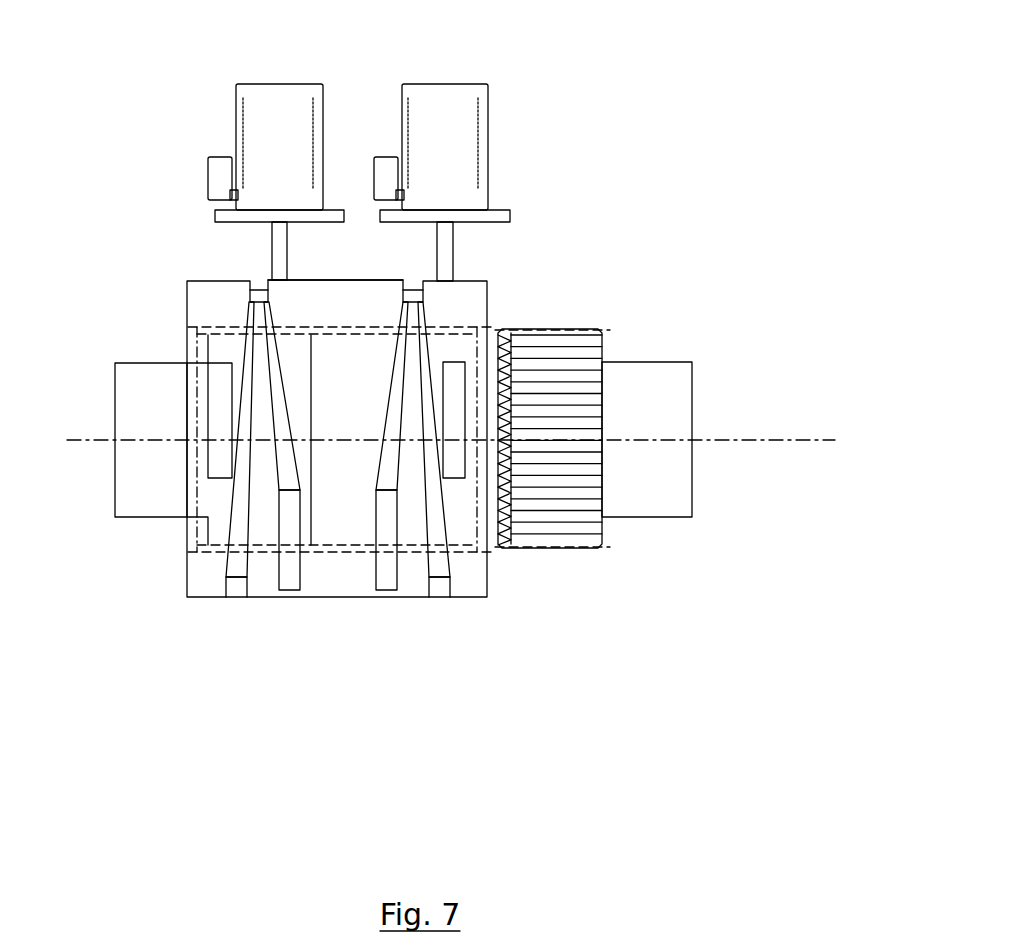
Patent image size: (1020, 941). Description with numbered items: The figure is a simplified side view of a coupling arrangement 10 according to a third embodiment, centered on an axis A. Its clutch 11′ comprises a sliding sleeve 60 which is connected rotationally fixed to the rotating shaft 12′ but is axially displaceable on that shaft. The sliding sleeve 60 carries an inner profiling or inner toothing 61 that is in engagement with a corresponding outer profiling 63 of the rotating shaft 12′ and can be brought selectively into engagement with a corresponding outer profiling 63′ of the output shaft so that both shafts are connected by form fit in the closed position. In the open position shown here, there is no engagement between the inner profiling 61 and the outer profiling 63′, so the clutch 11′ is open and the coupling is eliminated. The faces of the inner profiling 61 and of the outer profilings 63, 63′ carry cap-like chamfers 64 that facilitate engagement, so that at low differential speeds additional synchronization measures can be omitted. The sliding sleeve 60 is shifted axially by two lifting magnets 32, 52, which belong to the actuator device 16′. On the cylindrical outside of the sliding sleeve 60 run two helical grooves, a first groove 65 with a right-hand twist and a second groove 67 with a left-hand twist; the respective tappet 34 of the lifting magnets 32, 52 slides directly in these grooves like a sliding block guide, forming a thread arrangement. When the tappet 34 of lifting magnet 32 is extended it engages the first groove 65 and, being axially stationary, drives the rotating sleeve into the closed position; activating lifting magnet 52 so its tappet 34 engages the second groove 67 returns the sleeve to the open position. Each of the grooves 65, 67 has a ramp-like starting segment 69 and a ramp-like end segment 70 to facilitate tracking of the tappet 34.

The drive device 10 is at (125, 62).
The clutch 11′ is at (472, 627).
The rotating shaft 12′ is at (158, 493).
The actuator device 16′ is at (538, 232).
The lifting magnet 32 is at (296, 153).
The tappet 34 is at (287, 246).
The lifting magnet 52 is at (466, 150).
The sliding sleeve 60 is at (200, 303).
The inner profiling 61 is at (347, 547).
The outer profiling 63 is at (230, 330).
The outer profiling 63′ is at (563, 543).
The cap-like chamfers 64 is at (217, 550).
The first groove 65 is at (235, 598).
The second groove 67 is at (437, 602).
The ramp-like starting segment 69 is at (288, 577).
The ramp-like end segment 70 is at (222, 405).
The axis A is at (100, 442).